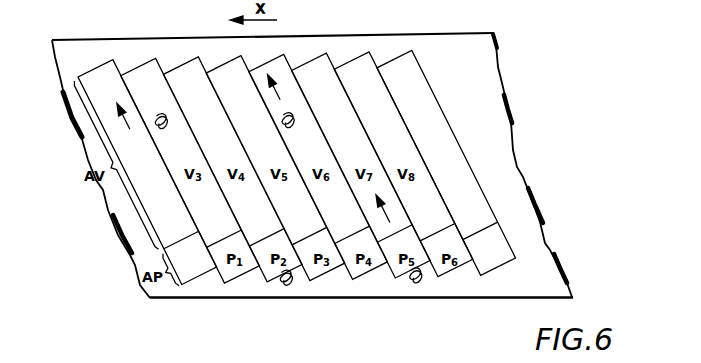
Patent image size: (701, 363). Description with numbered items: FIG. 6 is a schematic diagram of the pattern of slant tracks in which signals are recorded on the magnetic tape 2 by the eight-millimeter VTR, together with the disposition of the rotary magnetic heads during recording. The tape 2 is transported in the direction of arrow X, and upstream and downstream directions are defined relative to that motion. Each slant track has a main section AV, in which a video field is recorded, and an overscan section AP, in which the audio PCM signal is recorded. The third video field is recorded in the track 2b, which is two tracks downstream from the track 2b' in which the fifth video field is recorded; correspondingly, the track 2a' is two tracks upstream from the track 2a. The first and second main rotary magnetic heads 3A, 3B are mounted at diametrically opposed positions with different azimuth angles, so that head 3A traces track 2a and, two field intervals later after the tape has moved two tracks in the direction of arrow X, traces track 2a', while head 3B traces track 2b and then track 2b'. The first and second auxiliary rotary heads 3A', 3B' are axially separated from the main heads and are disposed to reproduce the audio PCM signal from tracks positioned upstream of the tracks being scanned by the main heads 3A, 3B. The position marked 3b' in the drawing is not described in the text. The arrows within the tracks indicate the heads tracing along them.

The magnetic tape 2 is at (99, 48).
The track 2a is at (232, 195).
The track 2b is at (190, 195).
The track 2a' is at (318, 193).
The track 2b' is at (352, 288).
The first main rotary magnetic head 3A is at (298, 300).
The second main rotary magnetic head 3B is at (154, 70).
The first auxiliary rotary head 3A' is at (301, 70).
The second auxiliary rotary head 3B' is at (442, 298).
The strip region with coupling 3b' is at (361, 191).